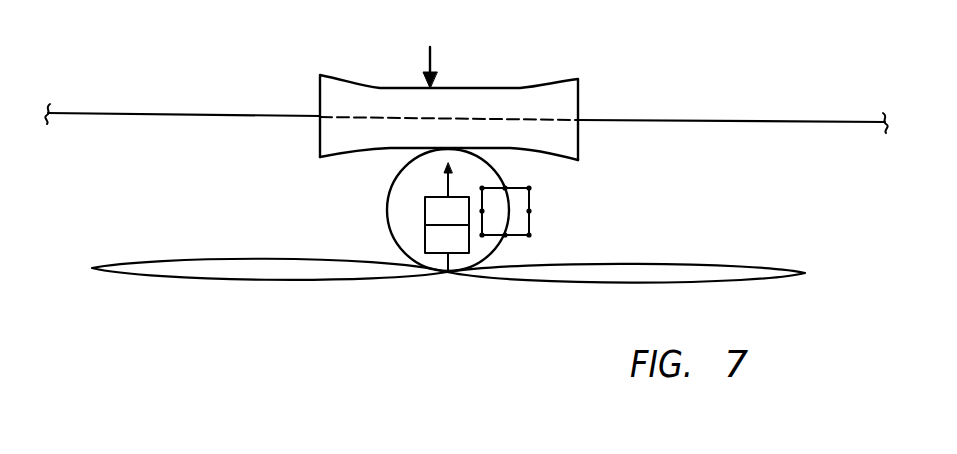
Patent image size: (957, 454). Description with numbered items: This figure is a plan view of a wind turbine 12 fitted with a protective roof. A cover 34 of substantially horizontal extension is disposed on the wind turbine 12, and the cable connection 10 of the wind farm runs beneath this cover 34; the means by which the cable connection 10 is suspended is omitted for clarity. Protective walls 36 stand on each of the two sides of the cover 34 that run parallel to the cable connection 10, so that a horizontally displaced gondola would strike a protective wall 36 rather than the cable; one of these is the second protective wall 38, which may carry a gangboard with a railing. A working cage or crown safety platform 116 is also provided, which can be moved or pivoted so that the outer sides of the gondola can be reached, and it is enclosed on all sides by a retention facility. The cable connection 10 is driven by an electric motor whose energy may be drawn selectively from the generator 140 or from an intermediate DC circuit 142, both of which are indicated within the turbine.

The cable connection 10 is at (137, 113).
The wind turbine 12 is at (443, 287).
The cover 34 is at (578, 150).
The protective wall 36 is at (430, 54).
The second protective wall 38 is at (354, 152).
The crown safety platform 116 is at (529, 204).
The generator 140 is at (465, 249).
The intermediate DC circuit 142 is at (465, 221).